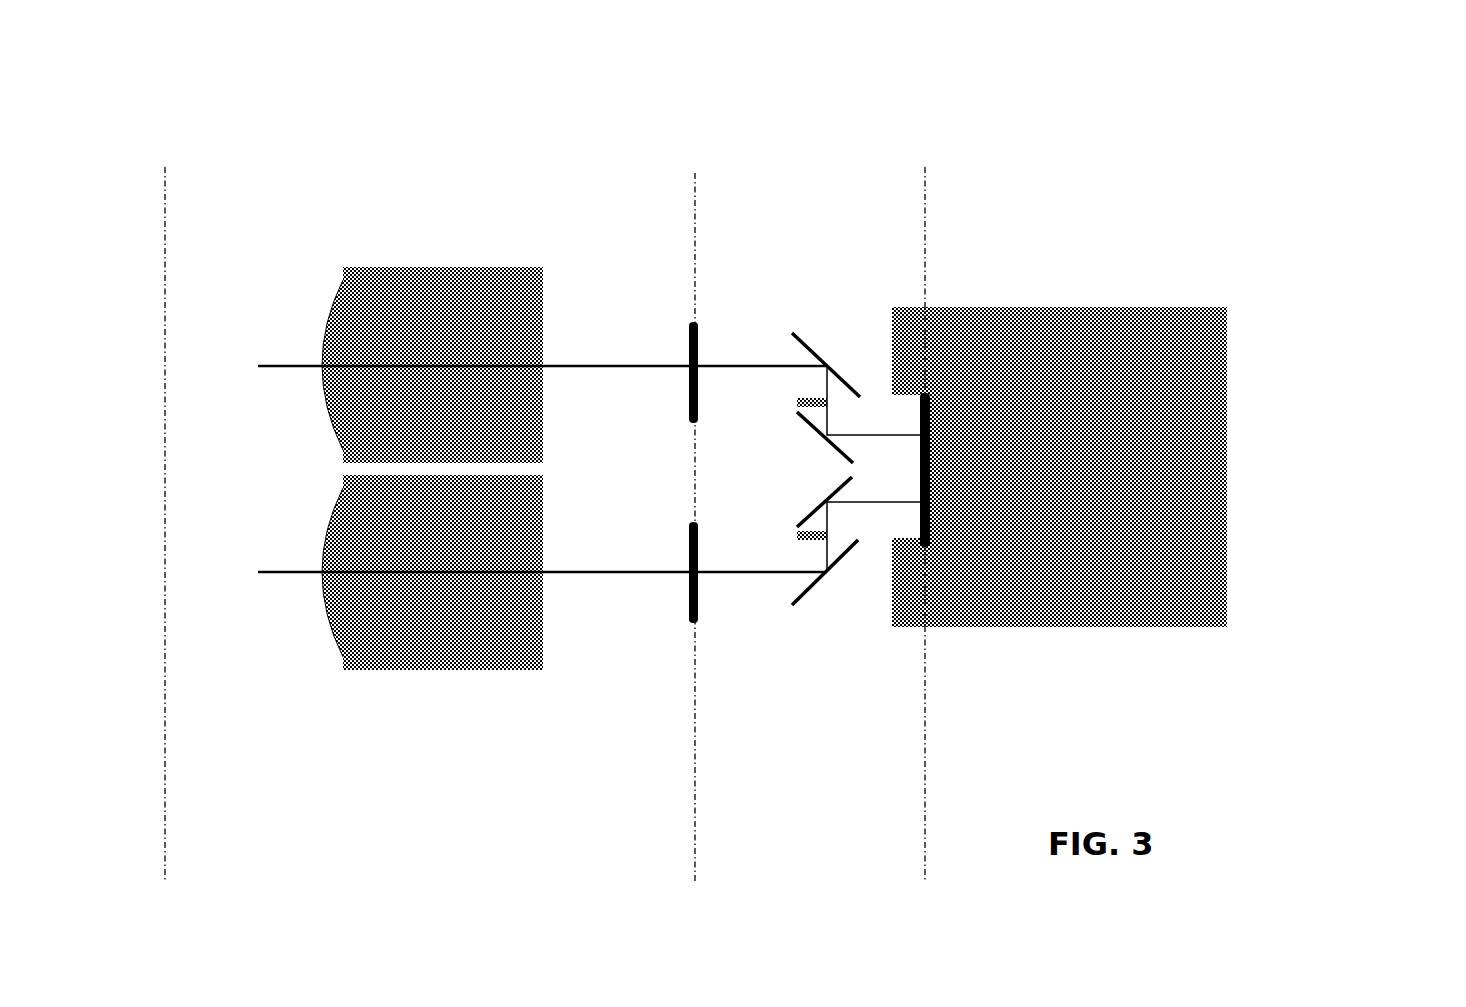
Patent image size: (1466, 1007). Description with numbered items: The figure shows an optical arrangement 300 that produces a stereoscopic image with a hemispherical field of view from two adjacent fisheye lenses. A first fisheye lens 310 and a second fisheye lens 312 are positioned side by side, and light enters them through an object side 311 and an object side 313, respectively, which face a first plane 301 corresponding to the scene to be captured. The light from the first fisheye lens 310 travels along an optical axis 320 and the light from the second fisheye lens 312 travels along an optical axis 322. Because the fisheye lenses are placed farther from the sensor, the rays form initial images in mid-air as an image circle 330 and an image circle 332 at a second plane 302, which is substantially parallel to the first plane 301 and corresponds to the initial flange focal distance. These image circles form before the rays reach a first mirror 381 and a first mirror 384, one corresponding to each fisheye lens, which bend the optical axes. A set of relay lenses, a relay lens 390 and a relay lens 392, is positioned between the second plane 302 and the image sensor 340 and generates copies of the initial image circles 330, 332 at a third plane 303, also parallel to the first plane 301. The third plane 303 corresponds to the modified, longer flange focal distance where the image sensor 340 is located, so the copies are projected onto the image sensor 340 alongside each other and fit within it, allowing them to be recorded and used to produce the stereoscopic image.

The optical arrangement 300 is at (770, 185).
The first plane 301 is at (165, 247).
The second plane 302 is at (695, 277).
The third plane 303 is at (924, 278).
The first fisheye lens 310 is at (377, 267).
The object side 311 is at (323, 335).
The second fisheye lens 312 is at (372, 670).
The object side 313 is at (322, 600).
The optical axis 320 is at (562, 366).
The optical axis 322 is at (588, 575).
The image circle 330 is at (701, 350).
The image circle 332 is at (698, 622).
The image sensor 340 is at (930, 460).
The first mirror 381 is at (850, 345).
The first mirror 384 is at (852, 540).
The relay lens 390 is at (860, 395).
The relay lens 392 is at (807, 593).